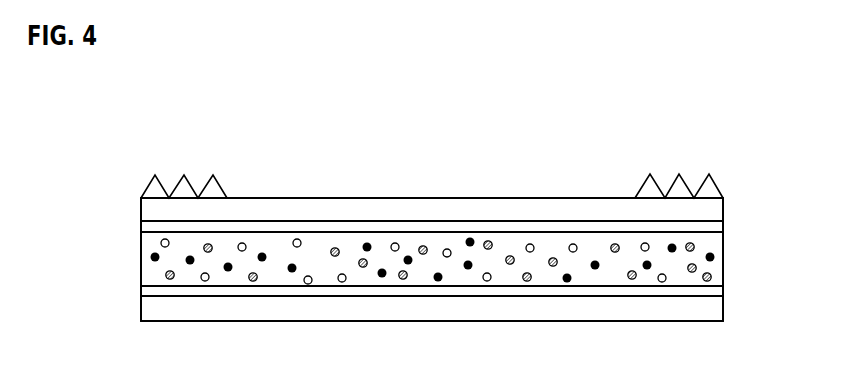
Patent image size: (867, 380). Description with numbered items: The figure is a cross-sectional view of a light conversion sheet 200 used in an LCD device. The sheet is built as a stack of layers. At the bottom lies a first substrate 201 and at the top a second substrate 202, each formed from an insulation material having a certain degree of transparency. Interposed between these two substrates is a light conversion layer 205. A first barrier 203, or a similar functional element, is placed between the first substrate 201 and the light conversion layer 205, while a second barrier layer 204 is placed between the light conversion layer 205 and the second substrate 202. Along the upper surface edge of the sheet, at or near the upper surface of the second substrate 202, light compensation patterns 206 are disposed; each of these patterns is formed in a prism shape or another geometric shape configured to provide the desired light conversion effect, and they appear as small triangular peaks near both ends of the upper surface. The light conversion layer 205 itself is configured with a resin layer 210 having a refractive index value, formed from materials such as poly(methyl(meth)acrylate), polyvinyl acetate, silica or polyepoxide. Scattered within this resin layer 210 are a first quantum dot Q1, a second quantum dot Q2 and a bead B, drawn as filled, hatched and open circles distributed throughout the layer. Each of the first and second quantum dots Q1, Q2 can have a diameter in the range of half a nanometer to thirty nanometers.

The light conversion sheet 200 is at (165, 113).
The first substrate 201 is at (141, 310).
The second substrate 202 is at (141, 207).
The first barrier 203 is at (141, 290).
The second barrier layer 204 is at (141, 226).
The light conversion layer 205 is at (131, 262).
The light compensation patterns 206 is at (130, 177).
The resin layer 210 is at (717, 266).
The bead B is at (642, 244).
The first quantum dot Q1 is at (647, 270).
The second quantum dot Q2 is at (707, 281).